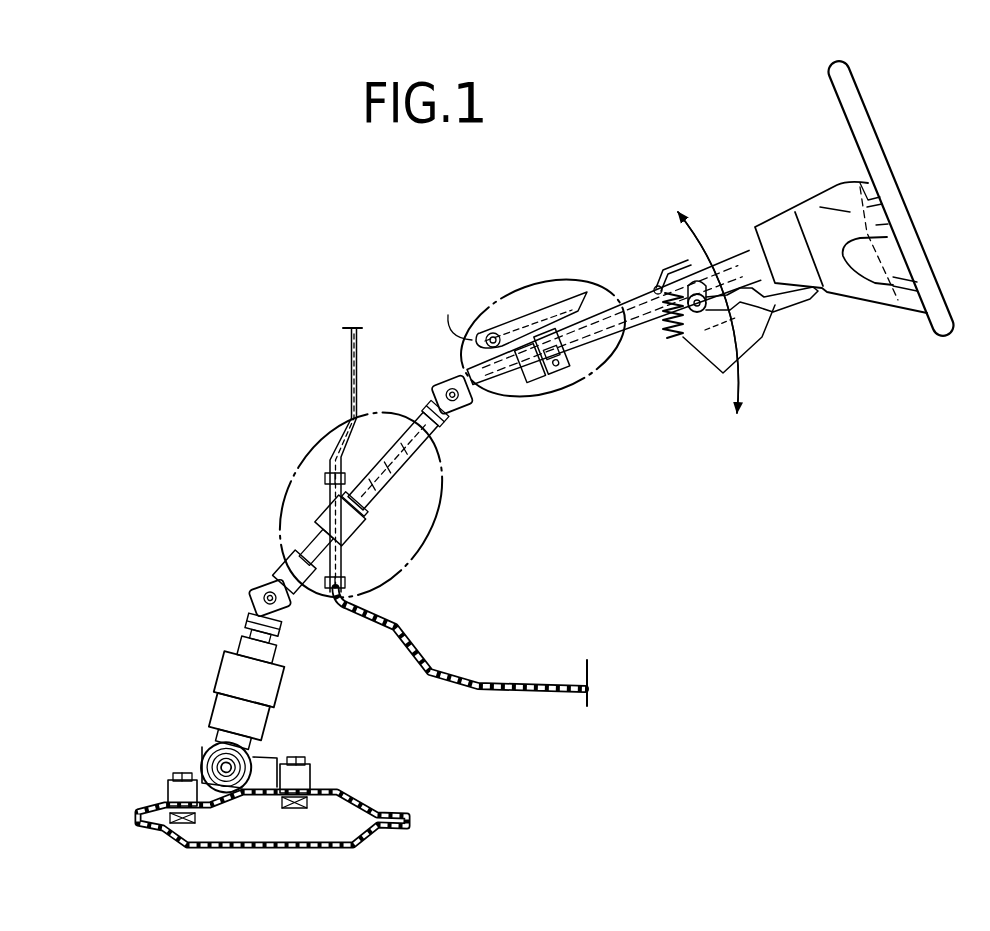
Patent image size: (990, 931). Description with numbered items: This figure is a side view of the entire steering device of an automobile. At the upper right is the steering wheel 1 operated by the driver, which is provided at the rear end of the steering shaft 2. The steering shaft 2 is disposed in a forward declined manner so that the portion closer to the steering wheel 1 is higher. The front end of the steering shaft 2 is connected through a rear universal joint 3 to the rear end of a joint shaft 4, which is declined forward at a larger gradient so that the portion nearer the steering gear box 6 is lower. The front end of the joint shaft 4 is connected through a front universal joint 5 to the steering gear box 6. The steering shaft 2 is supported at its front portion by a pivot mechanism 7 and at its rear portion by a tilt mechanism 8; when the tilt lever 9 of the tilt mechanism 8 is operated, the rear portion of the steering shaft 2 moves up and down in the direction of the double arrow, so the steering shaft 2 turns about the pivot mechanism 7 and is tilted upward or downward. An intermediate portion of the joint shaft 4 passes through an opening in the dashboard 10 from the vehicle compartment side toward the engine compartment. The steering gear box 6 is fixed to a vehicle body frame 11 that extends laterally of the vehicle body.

The steering wheel 1 is at (873, 143).
The steering shaft 2 is at (570, 283).
The rear universal joint 3 is at (437, 385).
The joint shaft 4 is at (382, 494).
The front universal joint 5 is at (257, 593).
The steering gear box 6 is at (313, 453).
The pivot mechanism 7 is at (563, 381).
The tilt mechanism 8 is at (677, 343).
The tilt lever 9 is at (792, 300).
The dashboard 10 is at (412, 632).
The vehicle body frame 11 is at (347, 787).